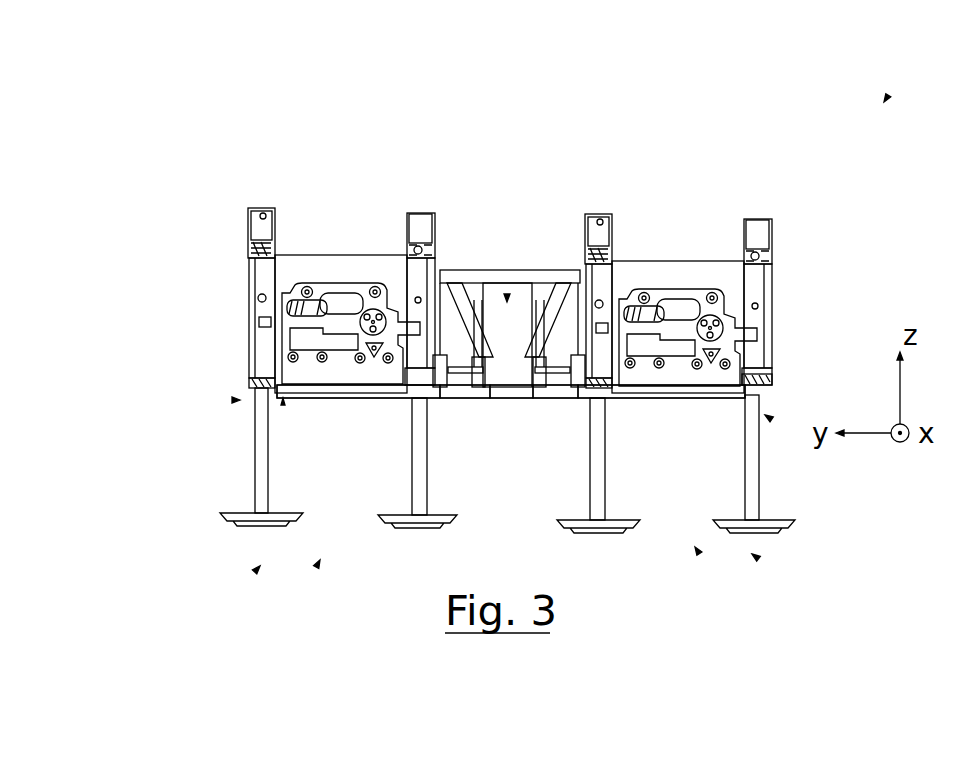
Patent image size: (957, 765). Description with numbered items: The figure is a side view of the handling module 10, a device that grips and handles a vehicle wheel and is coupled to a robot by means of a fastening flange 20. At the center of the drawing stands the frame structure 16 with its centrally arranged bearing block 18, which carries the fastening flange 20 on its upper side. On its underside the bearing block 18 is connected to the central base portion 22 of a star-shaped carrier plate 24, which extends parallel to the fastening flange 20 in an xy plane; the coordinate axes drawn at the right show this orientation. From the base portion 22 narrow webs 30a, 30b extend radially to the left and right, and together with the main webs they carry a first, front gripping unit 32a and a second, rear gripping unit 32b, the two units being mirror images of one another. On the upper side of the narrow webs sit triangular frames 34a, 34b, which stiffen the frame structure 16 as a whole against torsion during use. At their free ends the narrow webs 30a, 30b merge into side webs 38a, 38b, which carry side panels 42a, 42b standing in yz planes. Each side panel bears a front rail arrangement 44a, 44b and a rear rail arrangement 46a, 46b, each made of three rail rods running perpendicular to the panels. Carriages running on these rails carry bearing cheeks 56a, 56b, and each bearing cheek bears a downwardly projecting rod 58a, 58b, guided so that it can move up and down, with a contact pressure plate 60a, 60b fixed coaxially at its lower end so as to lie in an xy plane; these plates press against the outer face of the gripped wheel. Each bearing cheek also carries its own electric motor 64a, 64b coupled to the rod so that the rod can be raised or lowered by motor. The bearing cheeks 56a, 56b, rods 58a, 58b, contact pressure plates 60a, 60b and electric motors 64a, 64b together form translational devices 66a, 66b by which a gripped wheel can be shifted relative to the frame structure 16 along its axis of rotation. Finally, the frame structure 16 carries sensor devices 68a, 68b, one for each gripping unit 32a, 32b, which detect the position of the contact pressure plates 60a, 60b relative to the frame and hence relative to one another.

The handling module 10 is at (888, 96).
The frame structure 16 is at (283, 400).
The bearing block 18 is at (507, 300).
The fastening flange 20 is at (527, 272).
The central base portion 22 is at (520, 398).
The carrier plate 24 is at (762, 392).
The narrow web 30a is at (462, 398).
The narrow web 30b is at (558, 398).
The first gripping unit 32a is at (316, 567).
The second gripping unit 32b is at (699, 554).
The triangular frame 34a is at (447, 268).
The triangular frame 34b is at (570, 313).
The side web 38a is at (345, 390).
The side web 38b is at (678, 398).
The side panel 42a is at (283, 373).
The side panel 42b is at (738, 372).
The front rail arrangement 44a is at (311, 272).
The front rail arrangement 44b is at (710, 277).
The rear rail arrangement 46a is at (377, 272).
The rear rail arrangement 46b is at (647, 277).
The bearing cheek 56a is at (378, 256).
The bearing cheek 56b is at (765, 287).
The rod 58a is at (263, 488).
The rod 58b is at (595, 510).
The contact pressure plate 60a is at (243, 530).
The contact pressure plate 60b is at (625, 533).
The electric motor 64a is at (265, 207).
The electric motor 64b is at (607, 216).
The translational device 66a is at (255, 572).
The translational device 66b is at (758, 559).
The sensor device 68a is at (233, 400).
The sensor device 68b is at (771, 419).